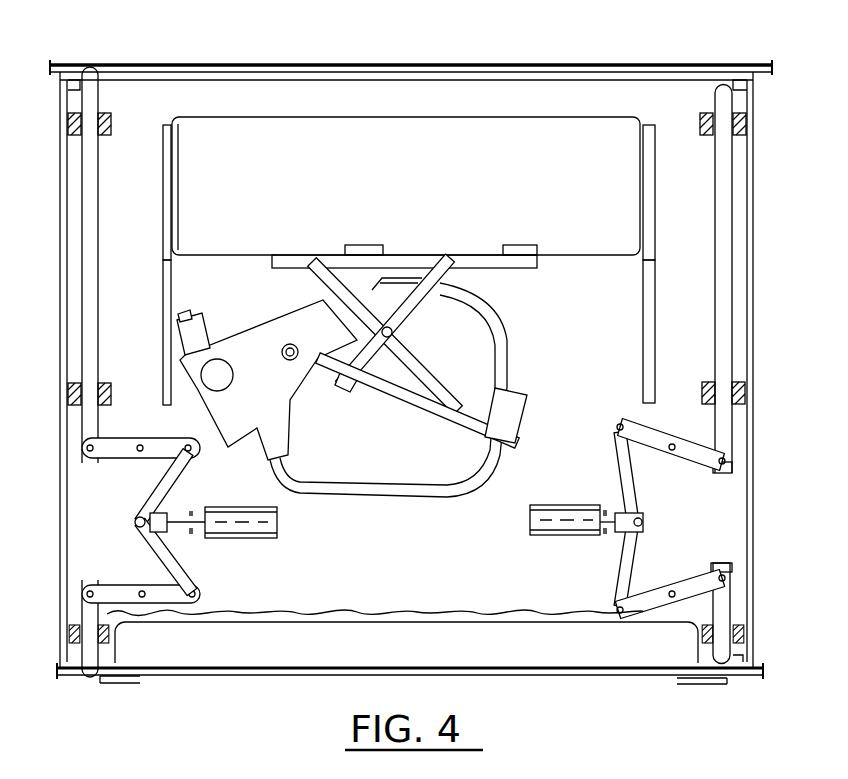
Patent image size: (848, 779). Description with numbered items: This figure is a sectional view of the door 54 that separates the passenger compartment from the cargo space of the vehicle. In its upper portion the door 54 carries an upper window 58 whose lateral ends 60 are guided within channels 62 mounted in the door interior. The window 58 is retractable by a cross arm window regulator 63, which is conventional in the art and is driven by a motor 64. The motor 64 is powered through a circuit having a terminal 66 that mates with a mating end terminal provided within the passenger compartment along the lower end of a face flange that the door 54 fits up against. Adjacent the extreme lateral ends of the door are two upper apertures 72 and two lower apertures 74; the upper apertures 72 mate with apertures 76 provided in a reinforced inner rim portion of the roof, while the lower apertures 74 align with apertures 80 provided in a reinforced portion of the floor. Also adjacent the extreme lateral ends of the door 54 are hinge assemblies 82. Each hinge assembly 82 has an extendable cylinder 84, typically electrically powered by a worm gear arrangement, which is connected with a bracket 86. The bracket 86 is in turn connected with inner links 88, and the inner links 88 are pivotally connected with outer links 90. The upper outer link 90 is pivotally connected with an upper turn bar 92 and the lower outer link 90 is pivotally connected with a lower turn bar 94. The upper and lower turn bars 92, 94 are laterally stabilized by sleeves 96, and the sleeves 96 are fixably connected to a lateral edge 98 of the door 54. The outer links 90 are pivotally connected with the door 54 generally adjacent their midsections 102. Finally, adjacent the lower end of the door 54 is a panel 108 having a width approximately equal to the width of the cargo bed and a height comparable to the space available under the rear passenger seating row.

The door 54 is at (470, 66).
The upper window 58 is at (405, 199).
The lateral ends 60 is at (167, 143).
The channels 62 is at (165, 274).
The cross arm window regulator 63 is at (272, 330).
The motor 64 is at (195, 338).
The terminal 66 is at (745, 658).
The upper apertures 72 is at (86, 85).
The lower apertures 74 is at (80, 680).
The apertures 76 is at (88, 64).
The apertures 80 is at (88, 680).
The hinge assemblies 82 is at (625, 558).
The extendable cylinder 84 is at (553, 513).
The bracket 86 is at (645, 521).
The inner links 88 is at (617, 460).
The outer links 90 is at (640, 430).
The upper turn bar 92 is at (727, 318).
The lower turn bar 94 is at (730, 610).
The sleeves 96 is at (105, 132).
The lateral edge 98 is at (757, 445).
The midsections 102 is at (670, 452).
The panel 108 is at (527, 655).